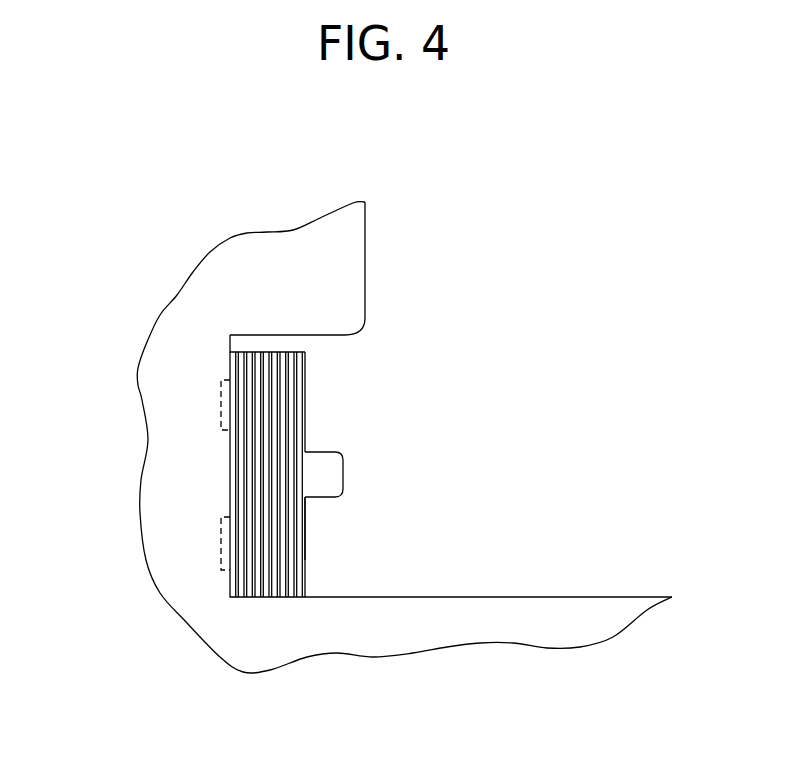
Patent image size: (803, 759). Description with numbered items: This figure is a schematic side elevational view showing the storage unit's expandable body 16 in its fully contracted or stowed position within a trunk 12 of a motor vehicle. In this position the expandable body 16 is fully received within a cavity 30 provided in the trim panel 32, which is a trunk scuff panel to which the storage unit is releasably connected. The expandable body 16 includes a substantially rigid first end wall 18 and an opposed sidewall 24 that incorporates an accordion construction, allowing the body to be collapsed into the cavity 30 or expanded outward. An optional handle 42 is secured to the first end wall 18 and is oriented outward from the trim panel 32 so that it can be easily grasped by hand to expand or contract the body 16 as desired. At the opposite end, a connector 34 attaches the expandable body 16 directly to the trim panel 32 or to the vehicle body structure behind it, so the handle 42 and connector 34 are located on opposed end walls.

The trunk 12 is at (508, 487).
The expandable body 16 is at (305, 583).
The first end wall 18 is at (305, 543).
The sidewall 24 is at (270, 553).
The cavity 30 is at (230, 342).
The trim panel 32 is at (263, 337).
The connector 34 is at (220, 413).
The handle 42 is at (340, 472).